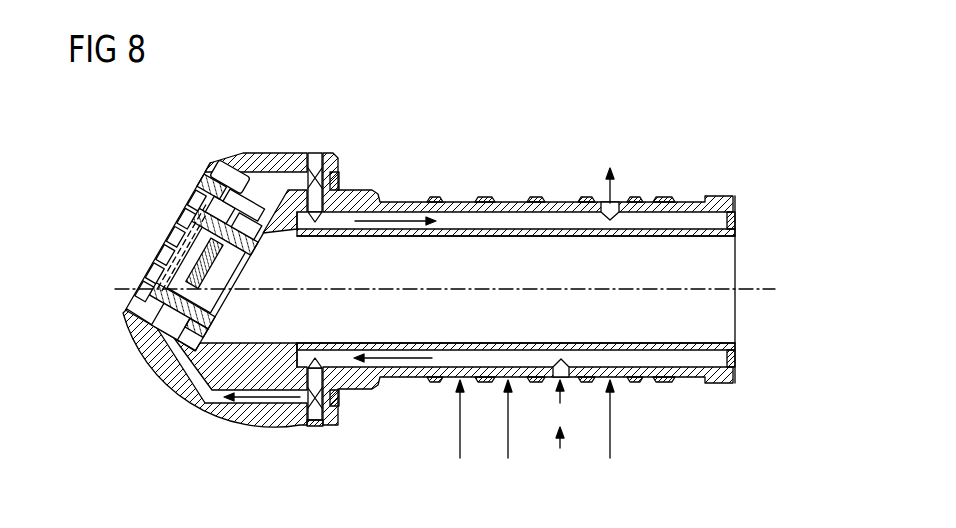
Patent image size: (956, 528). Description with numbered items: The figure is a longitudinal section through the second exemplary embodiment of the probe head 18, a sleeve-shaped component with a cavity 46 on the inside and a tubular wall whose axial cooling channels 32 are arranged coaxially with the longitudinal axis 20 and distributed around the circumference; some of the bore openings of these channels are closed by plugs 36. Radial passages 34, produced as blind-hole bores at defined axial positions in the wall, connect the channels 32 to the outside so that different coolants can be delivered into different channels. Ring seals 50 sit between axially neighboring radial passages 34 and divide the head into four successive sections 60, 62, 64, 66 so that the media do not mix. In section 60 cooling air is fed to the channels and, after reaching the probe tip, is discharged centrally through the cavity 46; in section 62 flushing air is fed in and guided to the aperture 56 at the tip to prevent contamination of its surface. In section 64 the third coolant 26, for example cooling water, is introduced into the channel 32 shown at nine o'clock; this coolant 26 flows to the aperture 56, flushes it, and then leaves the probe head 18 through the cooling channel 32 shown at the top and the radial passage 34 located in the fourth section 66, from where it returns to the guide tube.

The probe head 18 is at (663, 128).
The longitudinal axis 20 is at (458, 291).
The third coolant 26 is at (608, 185).
The cooling channels 32 is at (646, 225).
The radial passages 34 is at (614, 207).
The plugs 36 is at (738, 222).
The cavity 46 is at (731, 264).
The ring seals 50 is at (484, 199).
The aperture 56 is at (167, 237).
The first axial section 60 is at (460, 434).
The second axial section 62 is at (508, 434).
The third axial section 64 is at (560, 457).
The fourth axial section 66 is at (610, 434).